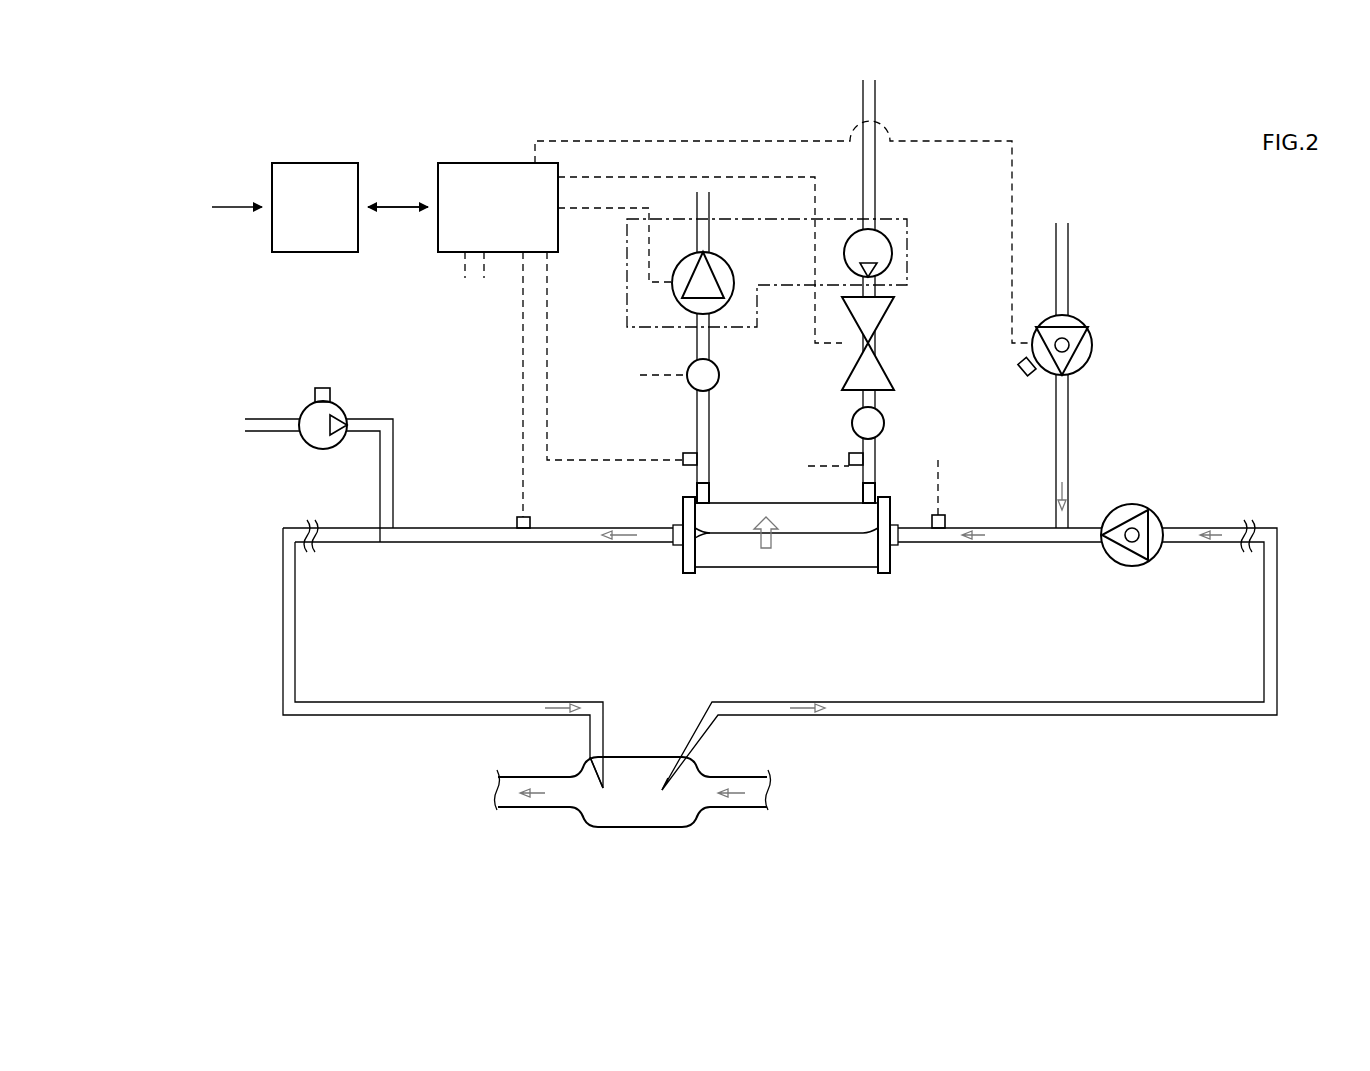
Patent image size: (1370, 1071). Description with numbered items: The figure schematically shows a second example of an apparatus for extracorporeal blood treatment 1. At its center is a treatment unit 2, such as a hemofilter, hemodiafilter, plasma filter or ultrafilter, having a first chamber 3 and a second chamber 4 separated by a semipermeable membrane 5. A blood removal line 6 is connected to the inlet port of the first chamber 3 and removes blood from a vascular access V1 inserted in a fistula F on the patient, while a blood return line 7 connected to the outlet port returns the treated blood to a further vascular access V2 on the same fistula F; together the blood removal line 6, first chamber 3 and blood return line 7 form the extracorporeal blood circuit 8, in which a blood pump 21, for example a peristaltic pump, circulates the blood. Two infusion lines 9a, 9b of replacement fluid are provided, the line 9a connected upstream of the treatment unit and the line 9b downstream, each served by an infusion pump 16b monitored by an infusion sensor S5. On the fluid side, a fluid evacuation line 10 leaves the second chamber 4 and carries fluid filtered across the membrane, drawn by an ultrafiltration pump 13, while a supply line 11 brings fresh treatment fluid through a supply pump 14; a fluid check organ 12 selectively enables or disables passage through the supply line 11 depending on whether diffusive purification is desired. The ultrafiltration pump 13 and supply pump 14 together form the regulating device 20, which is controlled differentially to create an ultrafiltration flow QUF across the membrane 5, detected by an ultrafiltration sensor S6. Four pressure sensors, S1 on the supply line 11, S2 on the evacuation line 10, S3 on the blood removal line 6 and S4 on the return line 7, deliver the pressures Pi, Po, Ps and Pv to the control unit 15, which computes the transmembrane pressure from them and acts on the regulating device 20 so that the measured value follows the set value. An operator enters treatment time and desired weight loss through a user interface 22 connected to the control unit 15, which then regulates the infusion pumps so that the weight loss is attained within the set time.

The apparatus for extracorporeal blood treatment 1 is at (657, 627).
The treatment unit 2 is at (760, 572).
The first chamber 3 is at (823, 558).
The second chamber 4 is at (808, 515).
The semipermeable membrane 5 is at (713, 542).
The blood removal line 6 is at (1000, 540).
The blood return line 7 is at (487, 540).
The extracorporeal blood circuit 8 is at (655, 556).
The infusion line 9a is at (1068, 480).
The infusion line 9b is at (385, 419).
The fluid evacuation line 10 is at (697, 425).
The supply line 11 is at (878, 470).
The fluid check organ 12 is at (880, 348).
The ultrafiltration pump 13 is at (722, 270).
The supply pump 14 is at (885, 240).
The control unit 15 is at (465, 178).
The infusion pump 16b is at (302, 415).
The regulating device 20 is at (627, 270).
The blood pump 21 is at (1125, 505).
The user interface 22 is at (315, 207).
The pressure sensor S1 is at (850, 455).
The pressure sensor S2 is at (683, 462).
The pressure sensor S3 is at (945, 518).
The pressure sensor S4 is at (520, 517).
The infusion sensor S5 is at (322, 388).
The ultrafiltration sensor S6 is at (730, 378).
The pressure detected by sensor S1 Pi is at (808, 466).
The pressure detected by sensor S2 Po is at (583, 465).
The pressure detected by sensor S3 Ps is at (938, 468).
The pressure detected by sensor S4 Pv is at (523, 410).
The ultrafiltration flow QUF is at (765, 525).
The fistula F is at (700, 768).
The vascular access V1 is at (665, 775).
The further vascular access V2 is at (585, 775).